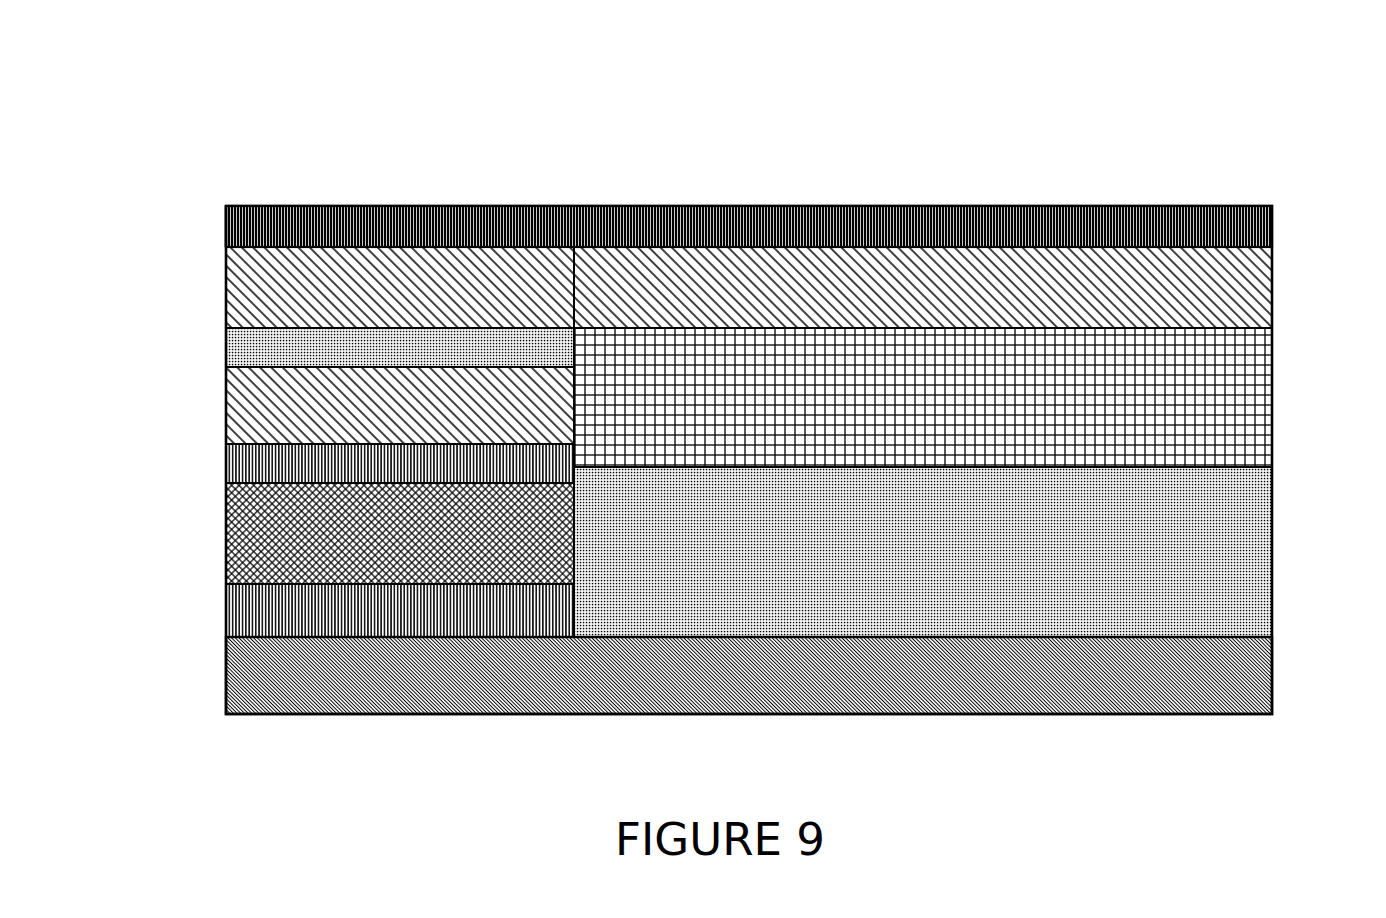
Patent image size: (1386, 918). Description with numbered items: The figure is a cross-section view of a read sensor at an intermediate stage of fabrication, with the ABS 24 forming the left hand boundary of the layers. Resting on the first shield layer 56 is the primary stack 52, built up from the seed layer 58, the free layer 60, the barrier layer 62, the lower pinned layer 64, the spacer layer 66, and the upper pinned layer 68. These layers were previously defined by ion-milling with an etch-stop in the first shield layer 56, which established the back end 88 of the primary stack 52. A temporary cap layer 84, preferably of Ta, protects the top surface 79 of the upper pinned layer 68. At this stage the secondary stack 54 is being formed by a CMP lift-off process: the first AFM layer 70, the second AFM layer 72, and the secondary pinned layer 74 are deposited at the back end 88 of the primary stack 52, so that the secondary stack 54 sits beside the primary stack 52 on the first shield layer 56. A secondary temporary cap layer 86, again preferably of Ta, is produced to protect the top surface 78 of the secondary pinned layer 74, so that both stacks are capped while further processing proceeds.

The ABS 24 is at (226, 262).
The primary stack 52 is at (375, 289).
The secondary stack 54 is at (803, 290).
The first shield layer 56 is at (241, 695).
The seed layer 58 is at (241, 612).
The free layer 60 is at (241, 555).
The barrier layer 62 is at (243, 470).
The lower pinned layer 64 is at (243, 417).
The spacer layer 66 is at (243, 356).
The upper pinned layer 68 is at (243, 287).
The first AFM layer 70 is at (1255, 535).
The second AFM layer 72 is at (1245, 393).
The secondary pinned layer 74 is at (1243, 287).
The top surface of the secondary pinned layer 78 is at (665, 240).
The top surface of the upper pinned layer 79 is at (472, 240).
The temporary cap layer 84 is at (226, 235).
The secondary temporary cap layer 86 is at (1035, 235).
The back end 88 is at (575, 374).